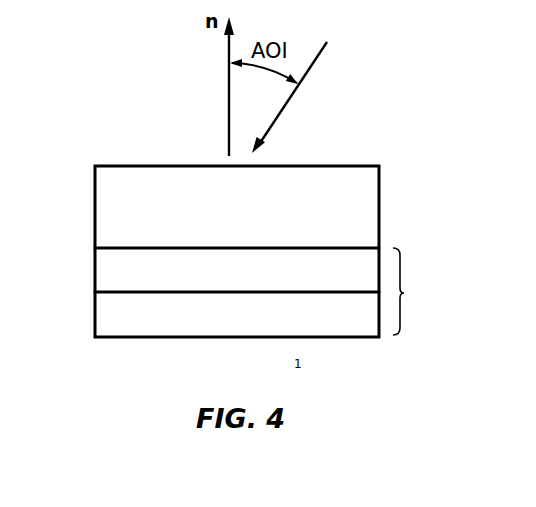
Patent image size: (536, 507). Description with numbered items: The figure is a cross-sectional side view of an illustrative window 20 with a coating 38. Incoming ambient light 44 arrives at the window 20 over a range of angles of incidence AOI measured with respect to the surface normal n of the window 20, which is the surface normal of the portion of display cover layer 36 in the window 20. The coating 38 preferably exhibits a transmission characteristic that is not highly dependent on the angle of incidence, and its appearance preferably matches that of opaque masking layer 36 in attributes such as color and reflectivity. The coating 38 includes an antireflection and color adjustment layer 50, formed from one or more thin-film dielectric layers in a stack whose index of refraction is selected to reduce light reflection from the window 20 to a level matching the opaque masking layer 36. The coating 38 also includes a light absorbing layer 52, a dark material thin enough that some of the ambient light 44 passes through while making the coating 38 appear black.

The window 20 is at (134, 135).
The display cover layer 36 is at (105, 203).
The coating 38 is at (410, 291).
The ambient light 44 is at (317, 58).
The antireflection and color adjustment layer 50 is at (105, 267).
The light absorbing layer 52 is at (105, 310).